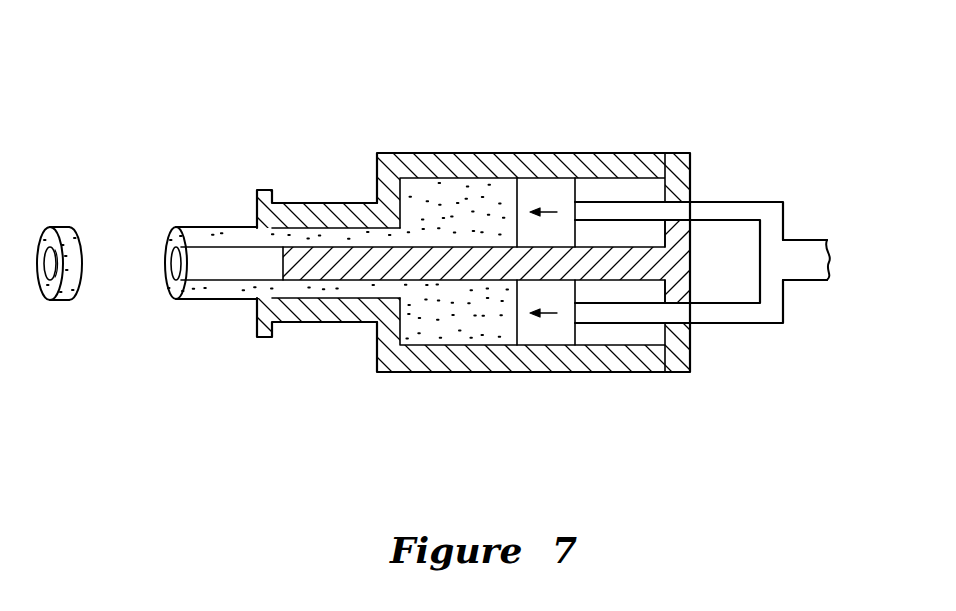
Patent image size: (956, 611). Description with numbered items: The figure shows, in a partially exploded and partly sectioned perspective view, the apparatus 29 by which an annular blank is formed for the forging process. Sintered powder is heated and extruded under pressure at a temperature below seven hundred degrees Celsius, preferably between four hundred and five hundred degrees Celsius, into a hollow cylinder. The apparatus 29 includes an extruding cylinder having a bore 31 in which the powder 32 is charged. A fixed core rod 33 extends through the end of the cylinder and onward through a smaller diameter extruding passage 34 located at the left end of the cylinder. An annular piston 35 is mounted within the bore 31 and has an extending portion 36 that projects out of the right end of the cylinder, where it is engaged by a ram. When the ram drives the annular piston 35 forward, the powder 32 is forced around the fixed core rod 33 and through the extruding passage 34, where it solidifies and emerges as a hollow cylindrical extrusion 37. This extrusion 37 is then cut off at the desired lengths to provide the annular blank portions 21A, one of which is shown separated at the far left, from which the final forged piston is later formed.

The annular blank 21A is at (72, 222).
The extruding apparatus 29 is at (527, 108).
The bore 31 is at (455, 336).
The powder 32 is at (438, 195).
The fixed core rod 33 is at (542, 262).
The extruding passage 34 is at (333, 293).
The annular piston 35 is at (563, 197).
The extending portion 36 is at (812, 240).
The hollow cylindrical extrusion 37 is at (212, 227).